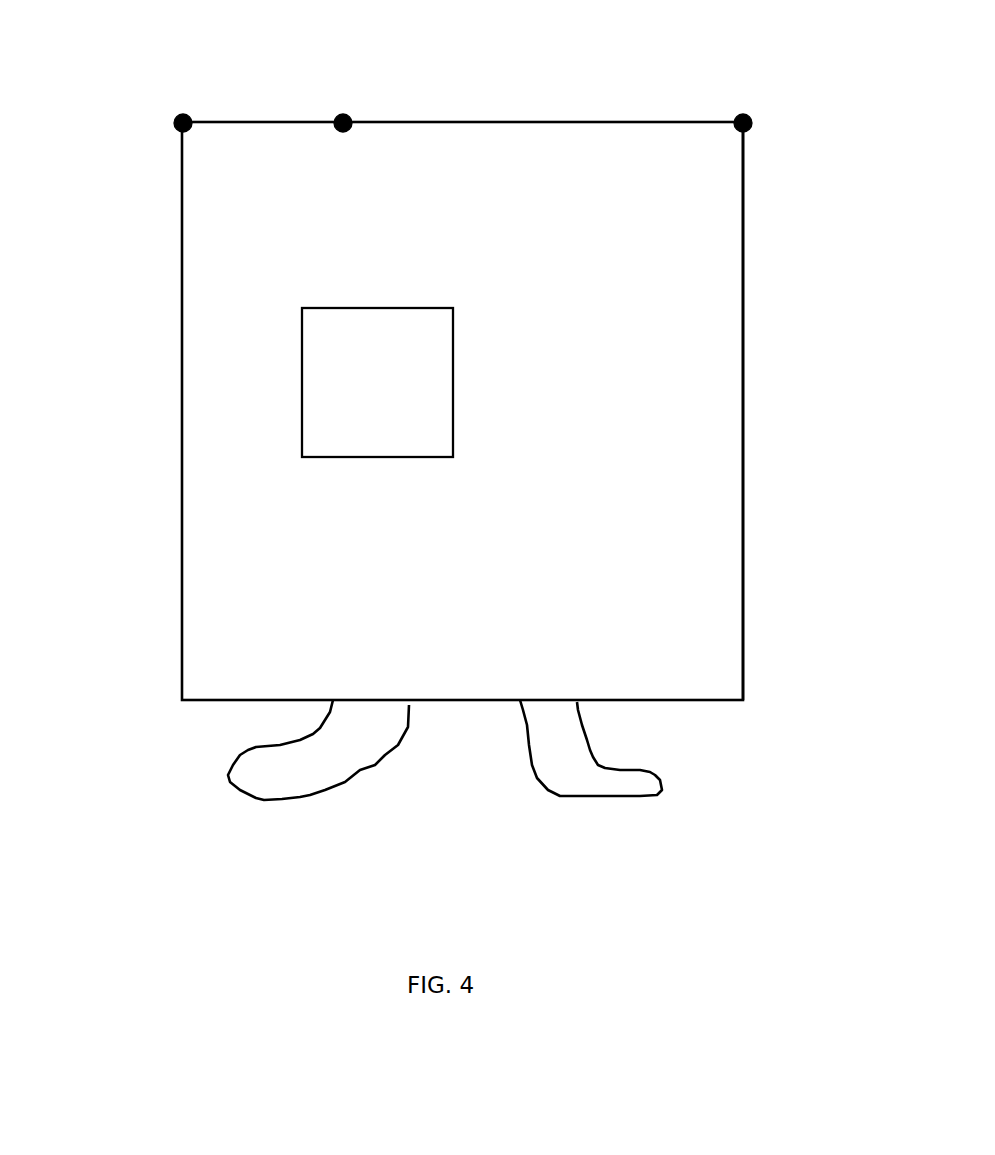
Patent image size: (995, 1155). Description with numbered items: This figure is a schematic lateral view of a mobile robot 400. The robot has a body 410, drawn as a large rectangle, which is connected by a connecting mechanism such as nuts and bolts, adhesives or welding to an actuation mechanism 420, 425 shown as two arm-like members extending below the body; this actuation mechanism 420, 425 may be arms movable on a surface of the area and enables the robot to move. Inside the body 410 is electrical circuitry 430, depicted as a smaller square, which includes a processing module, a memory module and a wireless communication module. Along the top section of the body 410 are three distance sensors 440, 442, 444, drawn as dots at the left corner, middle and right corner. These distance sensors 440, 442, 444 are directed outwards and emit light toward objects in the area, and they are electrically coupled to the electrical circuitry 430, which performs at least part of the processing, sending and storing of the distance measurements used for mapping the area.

The mobile robot 400 is at (768, 309).
The body 410 is at (711, 573).
The actuation mechanism 420 is at (580, 800).
The actuation mechanism 425 is at (280, 803).
The electrical circuitry 430 is at (302, 334).
The distance sensor 440 is at (175, 122).
The distance sensor 442 is at (349, 121).
The distance sensor 444 is at (751, 120).